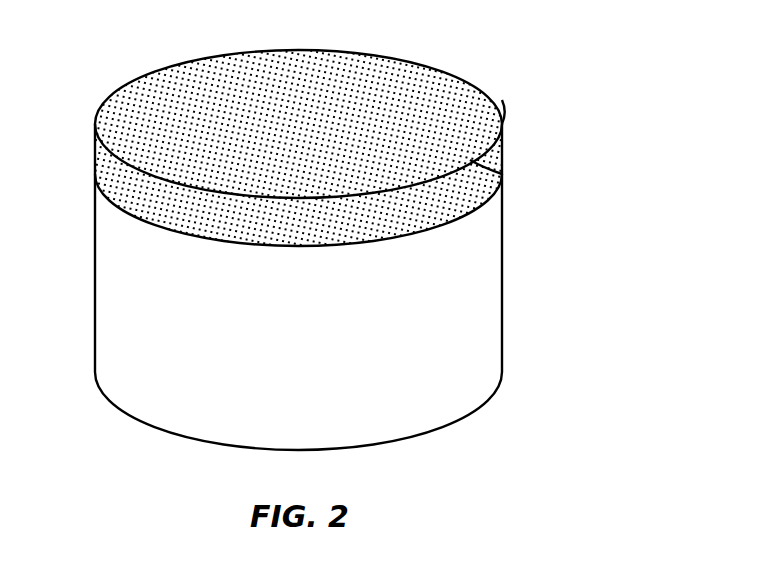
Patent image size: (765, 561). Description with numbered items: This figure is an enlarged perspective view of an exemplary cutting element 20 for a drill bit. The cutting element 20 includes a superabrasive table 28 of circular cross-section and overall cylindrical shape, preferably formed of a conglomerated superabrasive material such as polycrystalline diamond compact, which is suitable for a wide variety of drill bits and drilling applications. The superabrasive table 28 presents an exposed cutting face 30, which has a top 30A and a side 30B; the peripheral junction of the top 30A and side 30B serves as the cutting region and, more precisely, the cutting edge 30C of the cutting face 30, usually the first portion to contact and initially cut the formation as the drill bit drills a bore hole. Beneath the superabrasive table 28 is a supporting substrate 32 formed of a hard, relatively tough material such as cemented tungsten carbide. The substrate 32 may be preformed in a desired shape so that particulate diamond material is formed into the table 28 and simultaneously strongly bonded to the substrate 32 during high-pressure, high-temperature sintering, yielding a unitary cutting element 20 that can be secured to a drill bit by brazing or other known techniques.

The cutting element 20 is at (356, 239).
The superabrasive table 28 is at (487, 173).
The cutting face 30 is at (332, 137).
The top 30A is at (324, 140).
The side 30B is at (323, 232).
The cutting edge 30C is at (504, 114).
The supporting substrate 32 is at (460, 346).